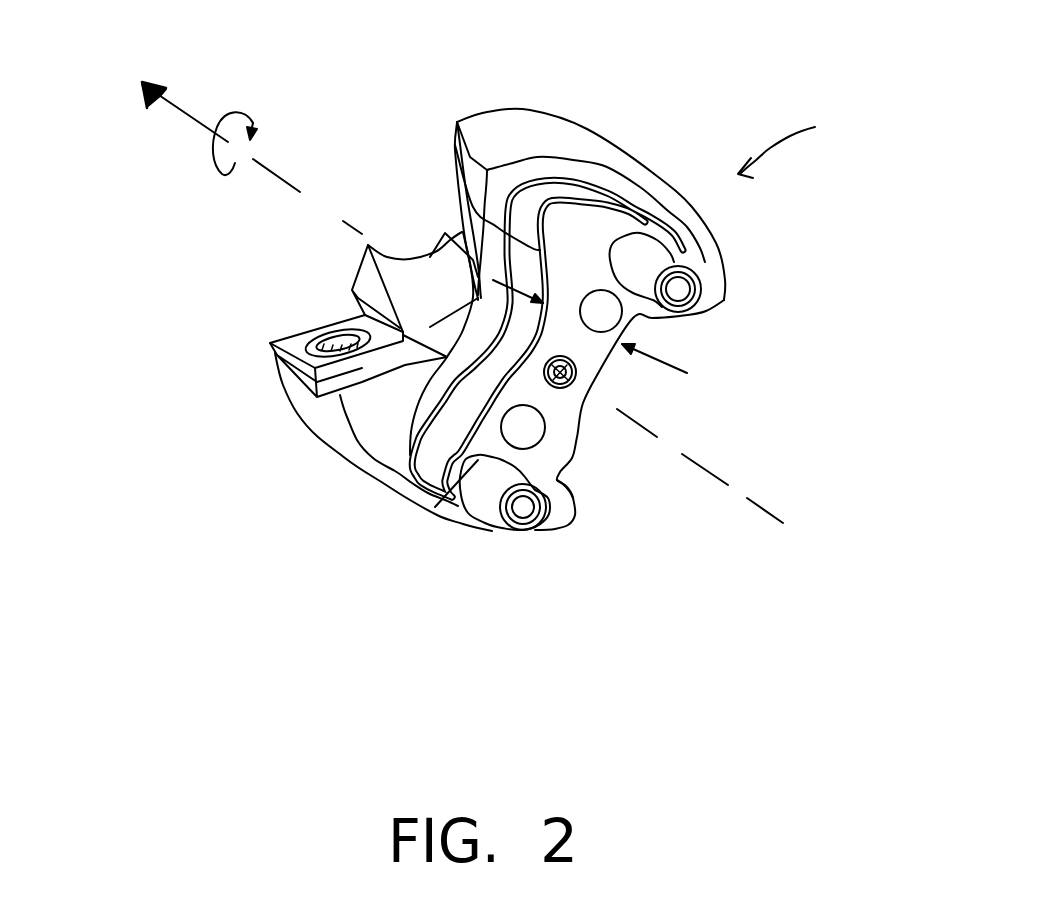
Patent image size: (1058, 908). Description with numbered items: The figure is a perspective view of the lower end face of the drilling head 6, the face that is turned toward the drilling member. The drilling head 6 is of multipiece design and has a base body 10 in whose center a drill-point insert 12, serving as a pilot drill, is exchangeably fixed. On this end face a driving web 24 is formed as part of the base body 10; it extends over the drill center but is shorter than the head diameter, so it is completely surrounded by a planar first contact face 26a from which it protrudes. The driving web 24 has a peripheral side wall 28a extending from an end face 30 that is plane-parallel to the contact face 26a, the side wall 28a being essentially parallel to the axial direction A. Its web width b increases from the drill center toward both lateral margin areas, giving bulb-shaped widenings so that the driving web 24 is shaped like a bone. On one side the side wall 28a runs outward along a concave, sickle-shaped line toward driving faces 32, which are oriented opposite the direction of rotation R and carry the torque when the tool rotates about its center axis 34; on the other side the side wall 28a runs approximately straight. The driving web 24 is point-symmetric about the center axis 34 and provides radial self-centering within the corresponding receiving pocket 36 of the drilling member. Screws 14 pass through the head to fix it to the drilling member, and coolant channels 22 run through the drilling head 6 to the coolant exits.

The drilling head 6 is at (790, 140).
The base body 10 is at (528, 145).
The drill-point insert 12 is at (433, 262).
The screws 14 is at (665, 262).
The coolant channels 22 is at (607, 313).
The driving web 24 is at (578, 440).
The first contact face 26a is at (388, 430).
The peripheral side wall 28a is at (458, 430).
The end face 30 is at (592, 233).
The driving faces 32 is at (457, 122).
The center axis 34 is at (640, 424).
The receiving pocket 36 is at (465, 477).
The axial direction A is at (166, 100).
The direction of rotation R is at (237, 112).
The web width b is at (687, 373).